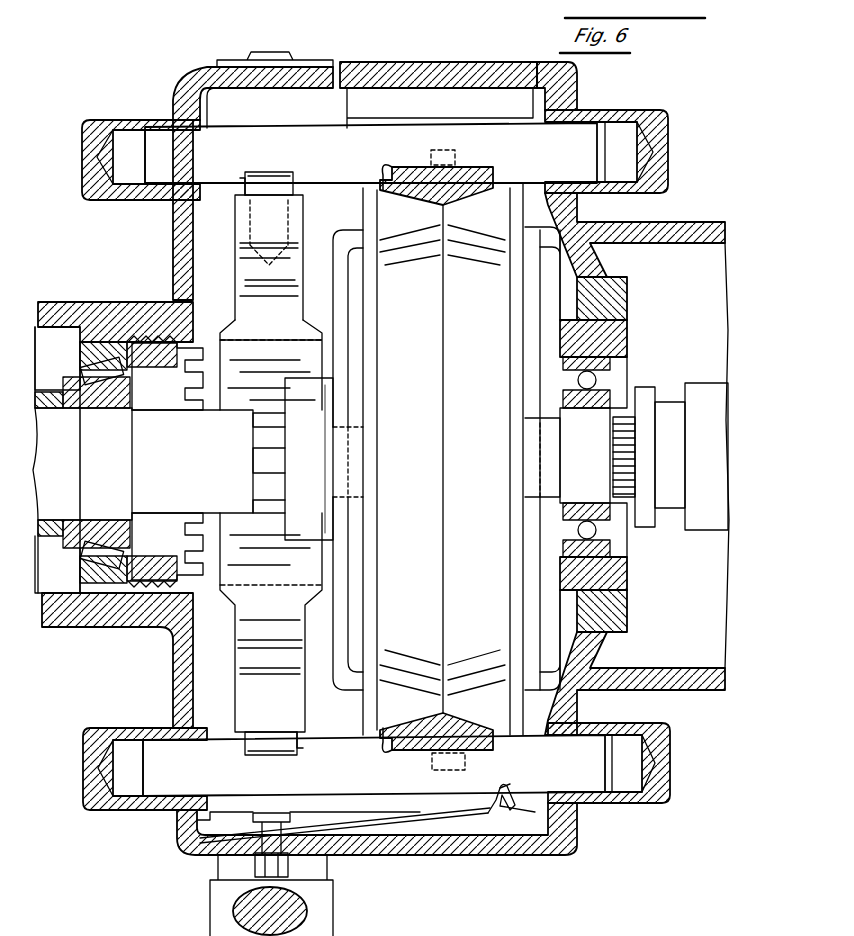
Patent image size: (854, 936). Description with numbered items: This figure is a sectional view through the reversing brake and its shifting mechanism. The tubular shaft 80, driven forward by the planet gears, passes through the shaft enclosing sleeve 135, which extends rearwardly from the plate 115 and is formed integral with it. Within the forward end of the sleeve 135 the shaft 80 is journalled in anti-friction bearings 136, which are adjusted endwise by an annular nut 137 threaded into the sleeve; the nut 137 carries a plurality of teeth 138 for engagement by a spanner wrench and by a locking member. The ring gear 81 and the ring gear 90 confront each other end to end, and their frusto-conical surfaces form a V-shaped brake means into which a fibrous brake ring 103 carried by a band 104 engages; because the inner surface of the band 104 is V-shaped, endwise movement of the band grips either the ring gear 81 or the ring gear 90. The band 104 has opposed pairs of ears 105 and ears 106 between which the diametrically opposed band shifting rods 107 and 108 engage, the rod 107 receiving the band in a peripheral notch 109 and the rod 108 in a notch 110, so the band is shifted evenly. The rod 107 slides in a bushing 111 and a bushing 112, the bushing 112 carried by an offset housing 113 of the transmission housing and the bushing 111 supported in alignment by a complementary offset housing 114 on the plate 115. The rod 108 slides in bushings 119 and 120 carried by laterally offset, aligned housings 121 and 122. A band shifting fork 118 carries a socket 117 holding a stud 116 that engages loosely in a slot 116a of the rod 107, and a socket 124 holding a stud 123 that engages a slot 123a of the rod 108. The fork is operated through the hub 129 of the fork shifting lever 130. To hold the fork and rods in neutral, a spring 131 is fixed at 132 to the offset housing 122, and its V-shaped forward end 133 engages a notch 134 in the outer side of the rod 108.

The tubular shaft 80 is at (118, 462).
The ring gear 81 is at (362, 700).
The ring gear 90 is at (467, 590).
The fibrous brake ring 103 is at (471, 720).
The band 104 is at (476, 200).
The ears 105 is at (460, 148).
The ears 106 is at (505, 762).
The band shifting rod 107 is at (580, 133).
The band shifting rod 108 is at (588, 803).
The peripheral notch 109 is at (385, 190).
The notch 110 is at (395, 748).
The bushing 111 is at (136, 122).
The bushing 112 is at (642, 112).
The offset housing 113 is at (465, 62).
The complementary offset housing 114 is at (207, 70).
The plate 115 is at (173, 236).
The stud 116 is at (278, 185).
The slot 116a is at (242, 178).
The socket 117 is at (298, 214).
The band shifting fork 118 is at (237, 312).
The bushing 119 is at (142, 812).
The bushing 120 is at (640, 806).
The offset housing 121 is at (450, 856).
The offset housing 122 is at (205, 852).
The stud 123 is at (246, 742).
The slot 123a is at (284, 752).
The socket 124 is at (271, 622).
The hub 129 is at (332, 892).
The fork shifting lever 130 is at (305, 908).
The spring 131 is at (470, 832).
The fixing point of spring 132 is at (293, 815).
The V-shaped forward end 133 is at (510, 820).
The notch 134 is at (497, 795).
The shaft enclosing sleeve 135 is at (60, 622).
The anti-friction bearings 136 is at (90, 398).
The annular nut 137 is at (162, 372).
The teeth 138 is at (193, 380).